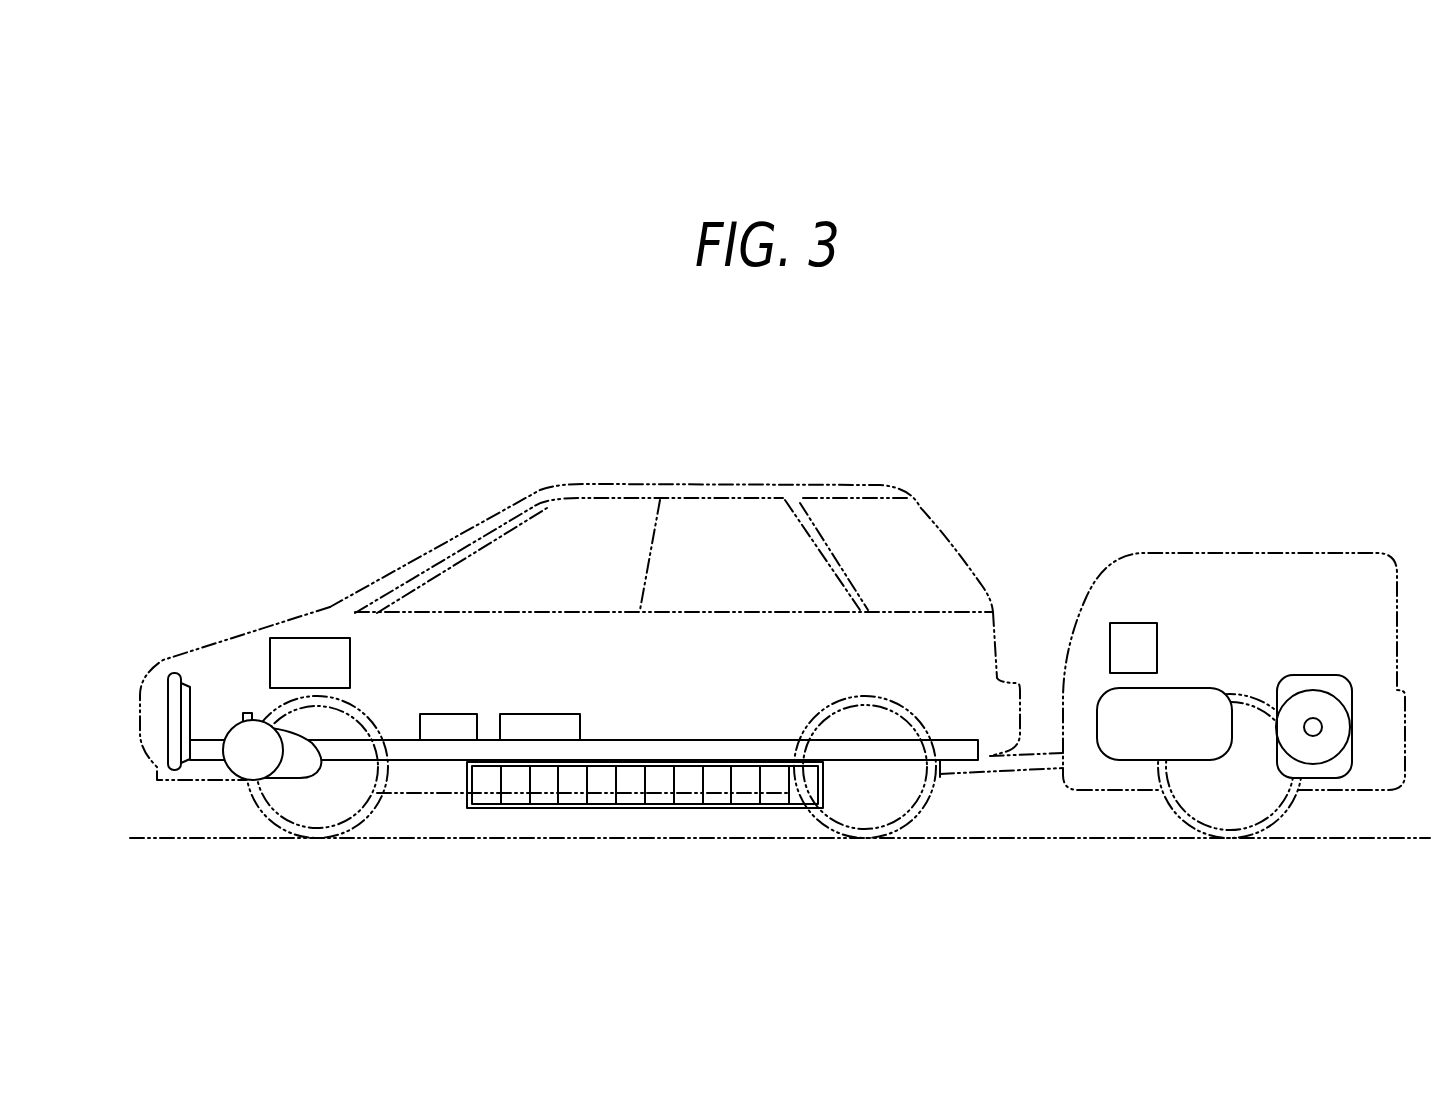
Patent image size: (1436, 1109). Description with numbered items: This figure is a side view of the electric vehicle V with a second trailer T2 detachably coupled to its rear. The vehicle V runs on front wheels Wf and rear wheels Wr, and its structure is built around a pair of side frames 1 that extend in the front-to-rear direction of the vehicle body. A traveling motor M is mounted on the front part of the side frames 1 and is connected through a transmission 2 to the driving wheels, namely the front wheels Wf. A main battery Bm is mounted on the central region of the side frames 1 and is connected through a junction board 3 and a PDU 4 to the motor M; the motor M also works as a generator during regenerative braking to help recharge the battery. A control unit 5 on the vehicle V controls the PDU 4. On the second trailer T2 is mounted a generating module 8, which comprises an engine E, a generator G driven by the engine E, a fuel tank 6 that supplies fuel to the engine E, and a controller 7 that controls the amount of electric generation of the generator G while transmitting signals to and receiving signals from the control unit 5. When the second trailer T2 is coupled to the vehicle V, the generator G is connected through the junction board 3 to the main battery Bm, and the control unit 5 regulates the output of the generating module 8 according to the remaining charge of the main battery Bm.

The side frame 1 is at (690, 745).
The transmission 2 is at (298, 762).
The junction board 3 is at (440, 714).
The PDU (power drive unit) 4 is at (307, 647).
The control unit 5 is at (537, 714).
The fuel tank 6 is at (1157, 700).
The controller 7 is at (1127, 635).
The generating module 8 is at (1246, 659).
The traveling motor M is at (242, 737).
The engine E is at (1307, 680).
The generator G is at (1337, 727).
The electric vehicle V is at (736, 474).
The second trailer T2 is at (1205, 546).
The front wheel Wf is at (307, 826).
The rear wheel Wr is at (880, 827).
The main battery Bm is at (692, 813).